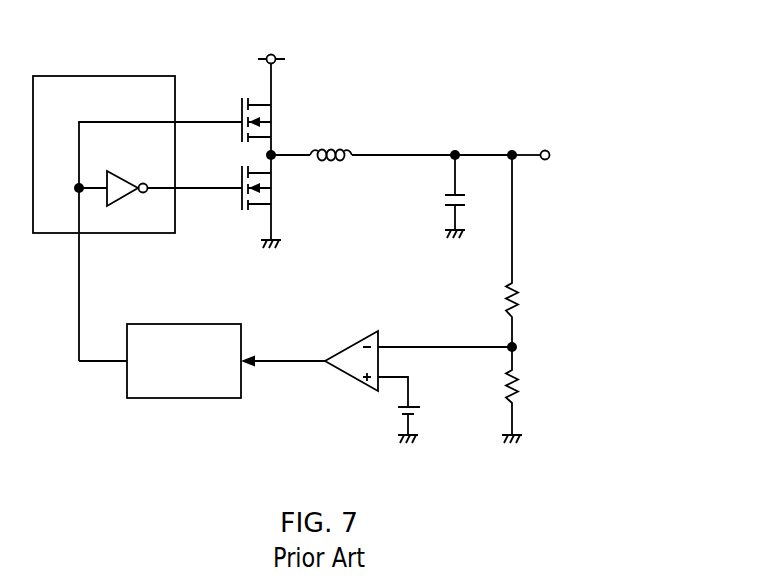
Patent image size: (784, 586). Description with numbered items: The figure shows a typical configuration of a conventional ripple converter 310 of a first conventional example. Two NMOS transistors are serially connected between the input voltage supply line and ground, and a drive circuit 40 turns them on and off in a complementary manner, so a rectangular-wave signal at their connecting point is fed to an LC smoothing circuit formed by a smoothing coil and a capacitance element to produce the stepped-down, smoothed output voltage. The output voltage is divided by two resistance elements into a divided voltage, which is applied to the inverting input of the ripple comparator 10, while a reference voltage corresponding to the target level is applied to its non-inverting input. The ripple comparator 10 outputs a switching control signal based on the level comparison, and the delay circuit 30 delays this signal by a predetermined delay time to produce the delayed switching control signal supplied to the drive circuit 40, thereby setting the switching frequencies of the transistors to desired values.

The ripple converter 310 is at (468, 116).
The drive circuit 40 is at (105, 76).
The delay circuit 30 is at (193, 324).
The ripple comparator 10 is at (350, 346).